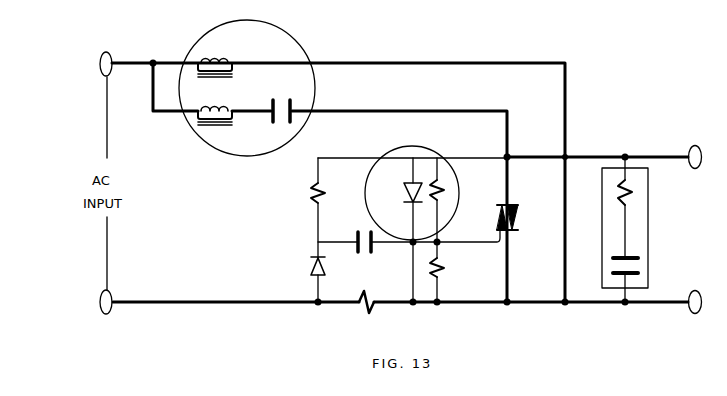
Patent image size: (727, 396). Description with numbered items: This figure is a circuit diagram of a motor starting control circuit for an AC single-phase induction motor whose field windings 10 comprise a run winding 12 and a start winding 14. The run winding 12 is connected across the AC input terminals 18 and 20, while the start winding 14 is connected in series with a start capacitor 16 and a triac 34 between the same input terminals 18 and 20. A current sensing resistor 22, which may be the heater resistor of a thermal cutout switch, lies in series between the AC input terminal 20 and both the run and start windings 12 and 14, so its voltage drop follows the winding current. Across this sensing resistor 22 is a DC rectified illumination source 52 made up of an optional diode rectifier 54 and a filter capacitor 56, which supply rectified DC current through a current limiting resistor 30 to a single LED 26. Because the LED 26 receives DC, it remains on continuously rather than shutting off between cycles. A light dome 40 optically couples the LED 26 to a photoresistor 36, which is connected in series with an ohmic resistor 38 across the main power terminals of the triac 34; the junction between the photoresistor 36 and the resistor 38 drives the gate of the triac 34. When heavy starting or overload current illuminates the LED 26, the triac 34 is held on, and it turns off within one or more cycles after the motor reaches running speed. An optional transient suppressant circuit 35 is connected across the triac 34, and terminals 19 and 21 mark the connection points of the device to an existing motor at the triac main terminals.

The field windings 10 is at (273, 45).
The run winding 12 is at (223, 61).
The start winding 14 is at (236, 117).
The start capacitor 16 is at (267, 115).
The AC input terminal 18 is at (91, 64).
The AC input terminal 20 is at (92, 302).
The terminal 21 is at (707, 157).
The terminal 19 is at (707, 302).
The current sensing resistor 22 is at (364, 288).
The LED 26 is at (398, 186).
The current limiting resistor 30 is at (312, 200).
The triac 34 is at (518, 220).
The transient suppressant circuit 35 is at (640, 238).
The photoresistor 36 is at (450, 202).
The ohmic resistor 38 is at (443, 262).
The light dome 40 is at (361, 182).
The DC rectified illumination source 52 is at (348, 224).
The diode rectifier 54 is at (312, 272).
The filter capacitor 56 is at (366, 253).